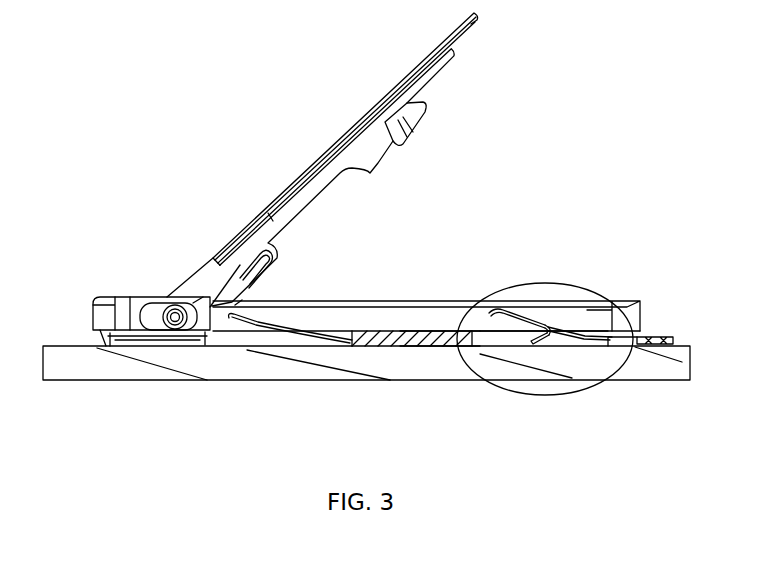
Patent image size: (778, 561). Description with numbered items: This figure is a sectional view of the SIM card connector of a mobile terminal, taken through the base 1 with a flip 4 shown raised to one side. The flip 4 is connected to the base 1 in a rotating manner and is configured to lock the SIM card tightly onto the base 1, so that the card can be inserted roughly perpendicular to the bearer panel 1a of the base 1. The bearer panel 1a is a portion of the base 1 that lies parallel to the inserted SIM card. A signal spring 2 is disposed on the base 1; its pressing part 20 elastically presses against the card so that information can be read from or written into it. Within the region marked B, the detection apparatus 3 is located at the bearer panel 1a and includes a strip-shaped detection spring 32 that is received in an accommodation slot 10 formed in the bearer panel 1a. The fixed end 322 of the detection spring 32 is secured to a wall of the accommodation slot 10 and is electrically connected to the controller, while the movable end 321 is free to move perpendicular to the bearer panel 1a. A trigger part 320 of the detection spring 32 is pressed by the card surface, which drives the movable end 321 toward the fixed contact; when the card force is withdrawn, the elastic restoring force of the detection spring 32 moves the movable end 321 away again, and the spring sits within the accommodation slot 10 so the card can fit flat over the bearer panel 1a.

The base 1 is at (378, 337).
The bearer panel 1a is at (445, 332).
The signal spring 2 is at (576, 330).
The detection apparatus 3 is at (151, 321).
The flip 4 is at (262, 214).
The accommodation slot 10 is at (493, 341).
The pressing part 20 is at (515, 310).
The detection spring 32 is at (589, 316).
The trigger part 320 is at (559, 318).
The movable end 321 is at (526, 345).
The fixed end 322 is at (605, 346).
The detail region B is at (575, 393).